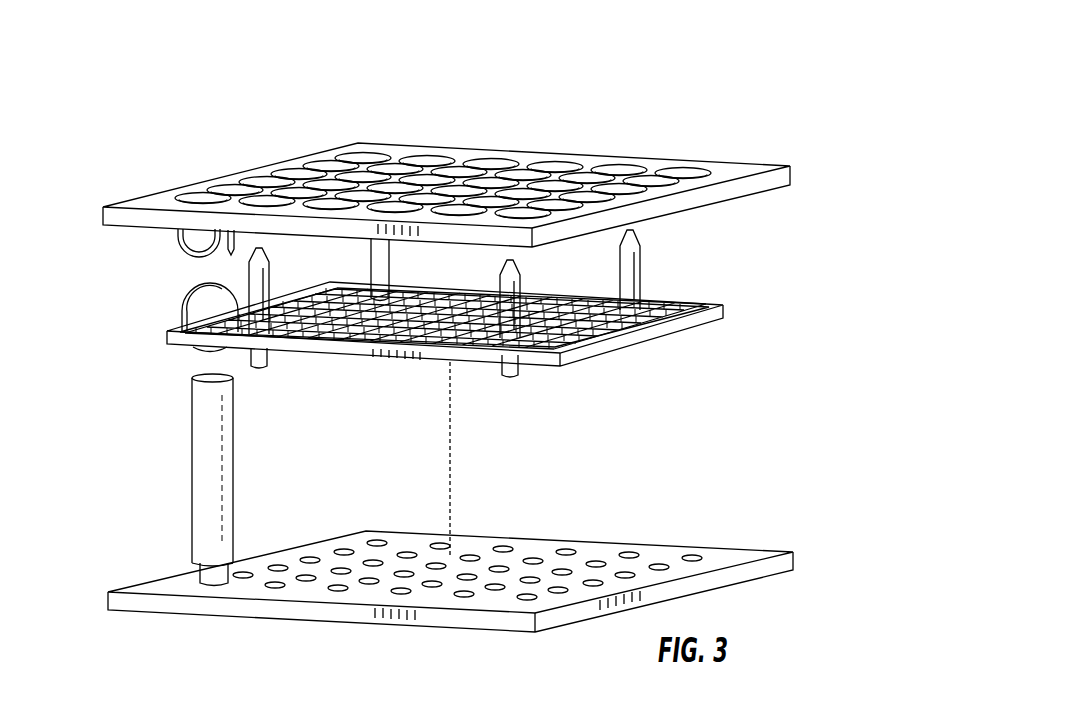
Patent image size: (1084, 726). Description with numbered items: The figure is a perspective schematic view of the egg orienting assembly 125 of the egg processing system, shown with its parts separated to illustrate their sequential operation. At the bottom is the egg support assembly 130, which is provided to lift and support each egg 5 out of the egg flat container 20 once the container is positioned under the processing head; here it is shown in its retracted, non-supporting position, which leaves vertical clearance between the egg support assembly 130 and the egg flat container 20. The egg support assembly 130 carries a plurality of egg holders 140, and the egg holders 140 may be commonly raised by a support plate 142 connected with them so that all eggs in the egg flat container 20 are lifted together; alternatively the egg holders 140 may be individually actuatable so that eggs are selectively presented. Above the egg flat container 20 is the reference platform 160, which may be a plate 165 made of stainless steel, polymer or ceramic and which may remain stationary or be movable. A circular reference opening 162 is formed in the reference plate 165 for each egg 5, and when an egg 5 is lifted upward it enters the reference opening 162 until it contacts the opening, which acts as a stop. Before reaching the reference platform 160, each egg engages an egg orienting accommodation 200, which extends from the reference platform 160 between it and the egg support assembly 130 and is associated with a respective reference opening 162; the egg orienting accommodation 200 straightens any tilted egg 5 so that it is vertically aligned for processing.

The egg 5 is at (195, 304).
The egg flat container 20 is at (434, 303).
The egg orienting assembly 125 is at (419, 176).
The egg support assembly 130 is at (419, 585).
The egg holder 140 is at (168, 461).
The support plate 142 is at (722, 559).
The reference platform 160 is at (444, 185).
The reference opening 162 is at (503, 167).
The reference plate 165 is at (721, 172).
The egg orienting accommodation 200 is at (172, 251).